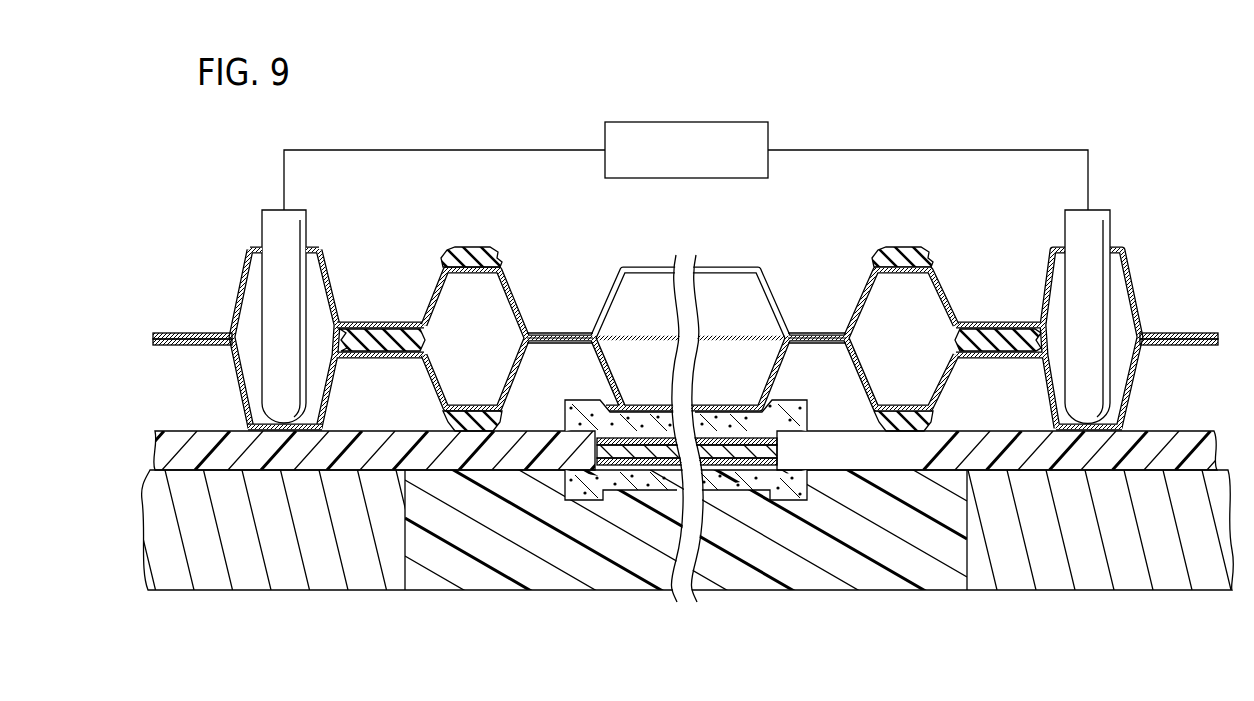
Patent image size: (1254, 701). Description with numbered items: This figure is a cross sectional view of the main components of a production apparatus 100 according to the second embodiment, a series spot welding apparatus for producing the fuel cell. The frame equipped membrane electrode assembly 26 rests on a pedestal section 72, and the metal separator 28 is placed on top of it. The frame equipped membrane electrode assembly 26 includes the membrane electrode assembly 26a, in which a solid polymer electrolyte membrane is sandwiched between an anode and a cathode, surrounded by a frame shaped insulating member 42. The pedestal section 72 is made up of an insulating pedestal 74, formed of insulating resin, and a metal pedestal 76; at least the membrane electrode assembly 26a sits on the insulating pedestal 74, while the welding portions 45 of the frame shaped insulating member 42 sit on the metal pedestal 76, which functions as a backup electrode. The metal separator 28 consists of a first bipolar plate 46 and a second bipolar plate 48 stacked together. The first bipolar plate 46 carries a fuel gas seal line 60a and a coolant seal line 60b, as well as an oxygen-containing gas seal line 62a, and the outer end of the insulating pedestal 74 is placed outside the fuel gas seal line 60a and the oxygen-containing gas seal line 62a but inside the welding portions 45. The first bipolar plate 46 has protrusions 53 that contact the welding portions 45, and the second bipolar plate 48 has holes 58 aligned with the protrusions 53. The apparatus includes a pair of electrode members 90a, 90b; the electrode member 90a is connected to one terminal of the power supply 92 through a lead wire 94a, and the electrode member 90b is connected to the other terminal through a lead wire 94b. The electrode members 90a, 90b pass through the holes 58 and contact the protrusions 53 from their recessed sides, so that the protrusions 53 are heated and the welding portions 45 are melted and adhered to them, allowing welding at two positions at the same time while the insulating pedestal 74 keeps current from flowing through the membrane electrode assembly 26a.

The production apparatus 100 is at (409, 113).
The power supply 92 is at (740, 128).
The lead wire 94a is at (822, 148).
The lead wire 94b is at (571, 147).
The electrode member 90a is at (1102, 230).
The electrode member 90b is at (272, 230).
The hole 58 is at (307, 250).
The coolant seal line 60b is at (370, 337).
The oxygen-containing gas seal line 62a is at (466, 250).
The metal separator 28 is at (97, 298).
The second bipolar plate 48 is at (220, 319).
The first bipolar plate 46 is at (220, 366).
The protrusion 53 is at (283, 421).
The welding portion 45 is at (288, 433).
The frame equipped membrane electrode assembly 26 is at (144, 440).
The membrane electrode assembly 26a is at (743, 502).
The pedestal section 72 is at (136, 509).
The metal pedestal 76 is at (210, 582).
The insulating pedestal 74 is at (620, 580).
The frame shaped insulating member 42 is at (532, 457).
The fuel gas seal line 60a is at (465, 424).